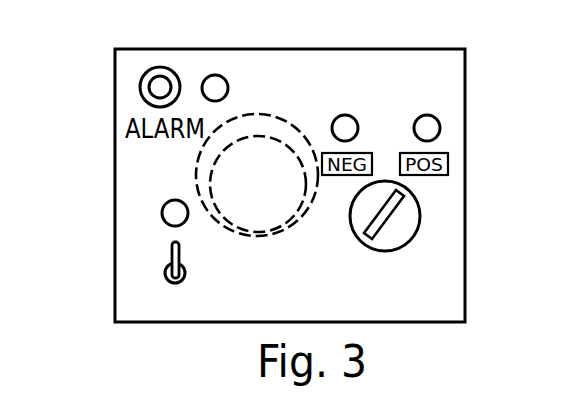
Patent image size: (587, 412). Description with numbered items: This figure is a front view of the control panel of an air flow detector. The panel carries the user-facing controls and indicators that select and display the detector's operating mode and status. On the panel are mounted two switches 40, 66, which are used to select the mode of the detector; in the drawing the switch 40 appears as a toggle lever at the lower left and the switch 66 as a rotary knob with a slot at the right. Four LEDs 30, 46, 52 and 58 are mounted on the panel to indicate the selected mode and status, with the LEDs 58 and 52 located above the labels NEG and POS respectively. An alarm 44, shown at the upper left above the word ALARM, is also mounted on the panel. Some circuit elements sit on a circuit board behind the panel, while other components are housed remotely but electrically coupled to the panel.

The alarm 44 is at (140, 85).
The LED 46 is at (228, 90).
The LED 58 is at (351, 116).
The LED 52 is at (419, 116).
The LED 30 is at (162, 208).
The switch 40 is at (181, 260).
The switch 66 is at (408, 248).